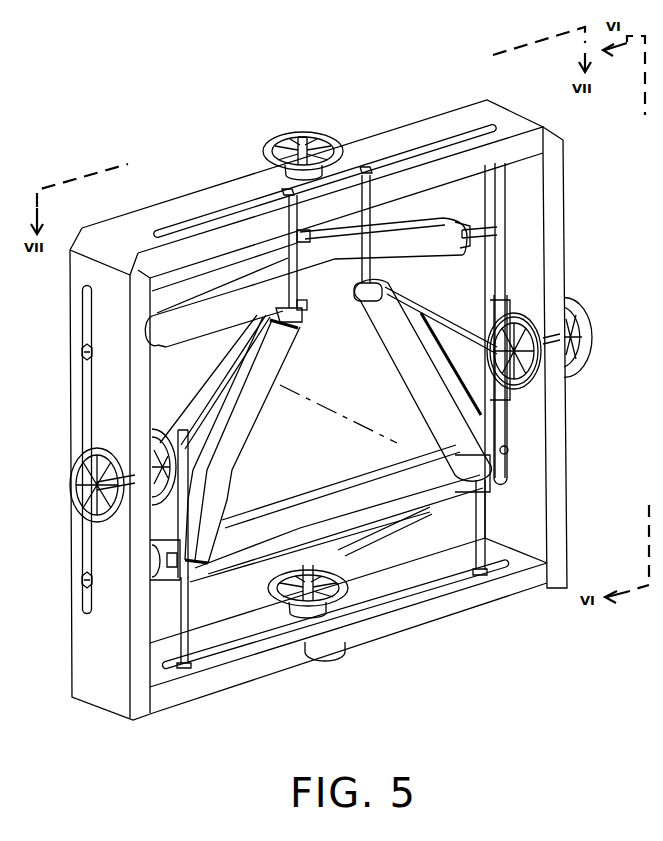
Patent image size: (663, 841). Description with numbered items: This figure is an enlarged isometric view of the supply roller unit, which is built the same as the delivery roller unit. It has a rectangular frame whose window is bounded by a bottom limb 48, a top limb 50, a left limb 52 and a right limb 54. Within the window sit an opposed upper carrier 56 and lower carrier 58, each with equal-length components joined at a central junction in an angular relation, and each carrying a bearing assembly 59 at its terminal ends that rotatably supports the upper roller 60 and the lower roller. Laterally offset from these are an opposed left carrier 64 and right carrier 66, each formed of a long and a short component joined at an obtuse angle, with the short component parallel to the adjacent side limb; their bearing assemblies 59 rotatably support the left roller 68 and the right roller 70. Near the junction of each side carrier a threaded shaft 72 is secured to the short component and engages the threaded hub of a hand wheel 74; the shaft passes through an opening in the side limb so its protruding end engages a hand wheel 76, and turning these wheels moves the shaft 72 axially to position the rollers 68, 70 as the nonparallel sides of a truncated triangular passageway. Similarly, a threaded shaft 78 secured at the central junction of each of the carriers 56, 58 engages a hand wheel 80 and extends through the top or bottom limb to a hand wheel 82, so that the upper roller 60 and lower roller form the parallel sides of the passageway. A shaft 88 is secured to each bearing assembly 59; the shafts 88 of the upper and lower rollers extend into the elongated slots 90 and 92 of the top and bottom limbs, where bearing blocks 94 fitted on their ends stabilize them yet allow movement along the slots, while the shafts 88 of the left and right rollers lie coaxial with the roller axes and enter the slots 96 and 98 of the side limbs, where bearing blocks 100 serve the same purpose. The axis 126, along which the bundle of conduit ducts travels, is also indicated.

The bottom limb 48 is at (435, 612).
The top limb 50 is at (203, 203).
The left limb 52 is at (95, 640).
The right limb 54 is at (562, 503).
The upper carrier 56 is at (420, 230).
The lower carrier 58 is at (397, 522).
The bearing assembly 59 is at (158, 348).
The upper roller 60 is at (307, 295).
The left carrier 64 is at (205, 400).
The right carrier 66 is at (482, 330).
The left roller 68 is at (238, 462).
The right roller 70 is at (418, 377).
The threaded shaft 72 is at (97, 505).
The hand wheel 74 is at (189, 523).
The hand wheel 76 is at (78, 455).
The threaded shaft 78 is at (310, 138).
The hand wheel 80 is at (368, 212).
The hand wheel 82 is at (267, 143).
The shaft 88 is at (365, 170).
The elongated slot 90 is at (462, 138).
The elongated slot 92 is at (262, 638).
The bearing block 94 is at (285, 193).
The slot 96 is at (86, 313).
The slot 98 is at (520, 420).
The bearing block 100 is at (503, 230).
The axis 126 is at (358, 422).